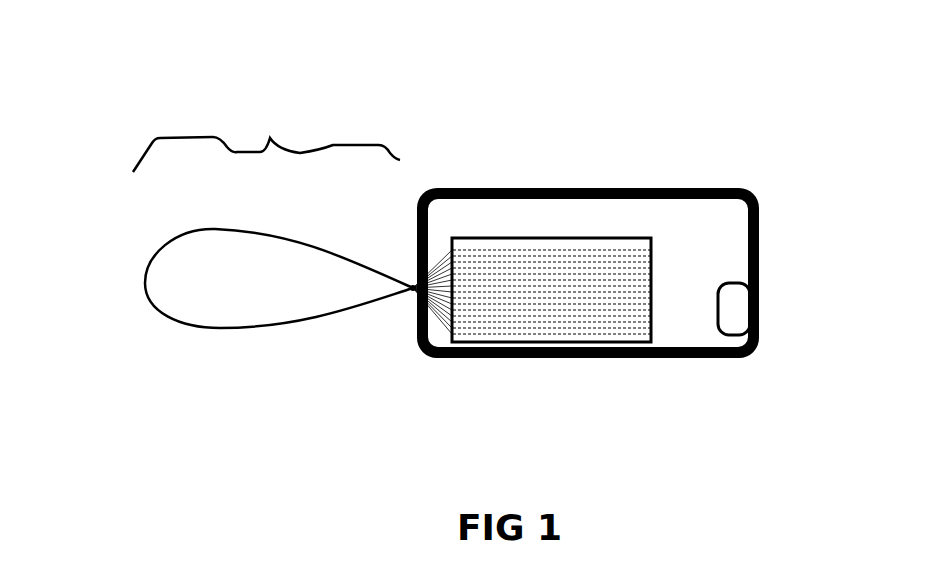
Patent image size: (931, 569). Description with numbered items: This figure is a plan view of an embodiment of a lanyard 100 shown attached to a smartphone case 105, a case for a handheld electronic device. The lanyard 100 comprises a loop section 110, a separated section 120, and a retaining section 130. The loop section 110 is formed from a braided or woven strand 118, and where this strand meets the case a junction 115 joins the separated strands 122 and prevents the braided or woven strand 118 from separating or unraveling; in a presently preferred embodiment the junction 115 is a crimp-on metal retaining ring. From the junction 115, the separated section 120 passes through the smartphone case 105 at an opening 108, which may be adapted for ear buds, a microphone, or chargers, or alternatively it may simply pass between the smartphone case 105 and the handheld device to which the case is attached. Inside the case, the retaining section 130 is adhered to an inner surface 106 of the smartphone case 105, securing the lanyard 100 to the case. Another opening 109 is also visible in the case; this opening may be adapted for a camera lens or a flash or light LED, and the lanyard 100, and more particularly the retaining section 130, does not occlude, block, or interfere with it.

The lanyard 100 is at (116, 50).
The smartphone case 105 is at (755, 190).
The inner surface 106 is at (726, 240).
The opening 108 is at (417, 280).
The opening 109 is at (733, 320).
The loop section 110 is at (273, 140).
The junction 115 is at (403, 280).
The braided or woven strand 118 is at (283, 330).
The separated section 120 is at (438, 255).
The separated strands 122 is at (438, 322).
The retaining section 130 is at (542, 230).